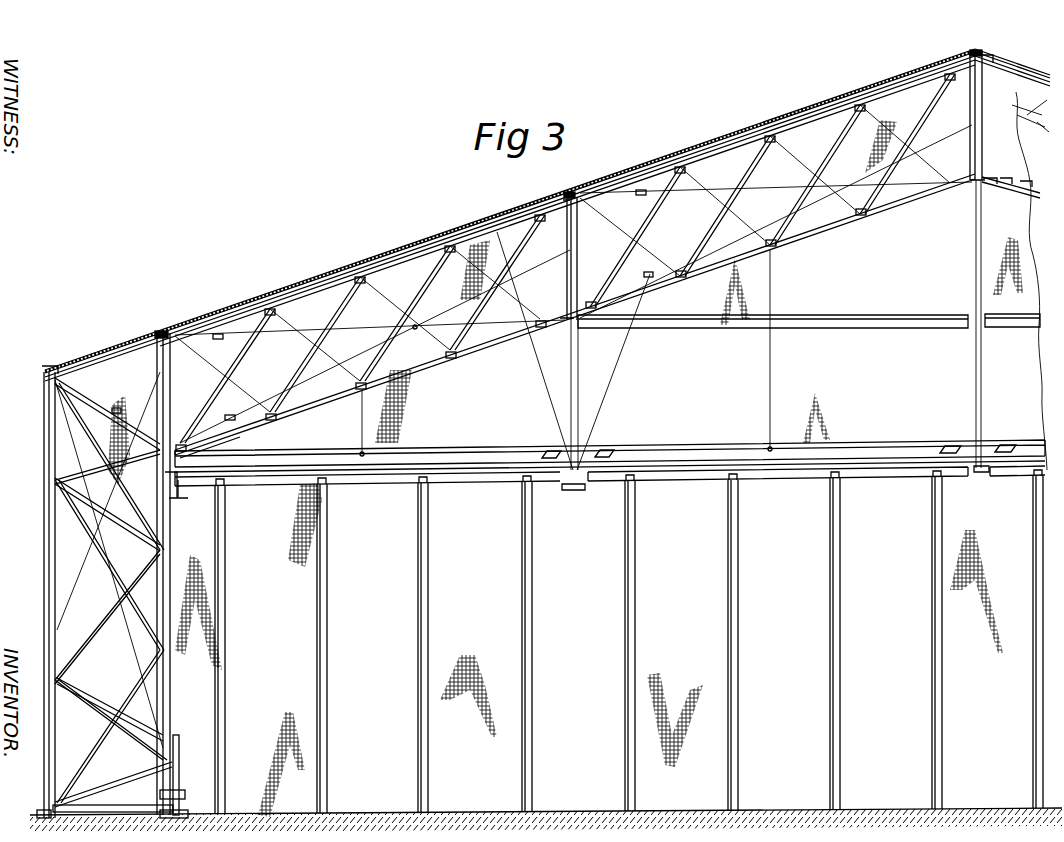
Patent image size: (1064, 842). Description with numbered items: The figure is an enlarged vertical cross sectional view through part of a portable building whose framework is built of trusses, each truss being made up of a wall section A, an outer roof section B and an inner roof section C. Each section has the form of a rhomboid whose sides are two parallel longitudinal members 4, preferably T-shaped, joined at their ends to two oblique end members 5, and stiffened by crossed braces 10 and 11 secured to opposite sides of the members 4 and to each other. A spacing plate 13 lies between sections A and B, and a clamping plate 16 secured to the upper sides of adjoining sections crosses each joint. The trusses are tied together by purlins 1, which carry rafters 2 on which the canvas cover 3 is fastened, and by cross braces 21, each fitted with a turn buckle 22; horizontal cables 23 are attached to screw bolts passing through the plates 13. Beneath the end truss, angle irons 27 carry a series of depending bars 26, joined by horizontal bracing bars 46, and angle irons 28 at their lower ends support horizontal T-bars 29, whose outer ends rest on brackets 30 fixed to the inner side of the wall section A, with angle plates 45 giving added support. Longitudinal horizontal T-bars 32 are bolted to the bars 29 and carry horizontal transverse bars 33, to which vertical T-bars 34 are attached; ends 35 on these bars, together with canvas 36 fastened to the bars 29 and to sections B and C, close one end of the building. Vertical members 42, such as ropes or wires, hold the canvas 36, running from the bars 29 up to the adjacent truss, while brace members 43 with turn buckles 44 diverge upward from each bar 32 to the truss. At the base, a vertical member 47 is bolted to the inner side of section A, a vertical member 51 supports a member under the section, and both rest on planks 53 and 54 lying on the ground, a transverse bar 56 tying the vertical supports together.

The purlin 1 is at (258, 304).
The rafter 2 is at (323, 286).
The canvas cover 3 is at (297, 282).
The longitudinal member 4 is at (390, 268).
The end member 5 is at (125, 362).
The crossed brace 10 is at (392, 341).
The crossed brace 11 is at (432, 318).
The spacing plate 13 is at (184, 492).
The clamping plate 16 is at (165, 328).
The cross brace 21 is at (385, 322).
The turn buckle 22 is at (225, 338).
The horizontal cable 23 is at (488, 452).
The depending bar 26 is at (578, 381).
The angle iron 27 is at (985, 190).
The angle iron 28 is at (605, 450).
The horizontal T-bar 29 is at (430, 452).
The bracket 30 is at (165, 500).
The longitudinal horizontal T-bar 32 is at (572, 491).
The horizontal transverse bar 33 is at (482, 483).
The vertical T-bar 34 is at (420, 603).
The end 35 is at (680, 480).
The canvas 36 is at (890, 460).
The vertical member 42 is at (360, 429).
The brace member 43 is at (545, 406).
The turn buckle 44 is at (560, 456).
The angle plate 45 is at (236, 450).
The horizontal bracing bar 46 is at (870, 315).
The vertical member 47 is at (180, 753).
The vertical member 51 is at (183, 783).
The plank 53 is at (188, 811).
The plank 54 is at (40, 817).
The transverse bar 56 is at (113, 797).
The wall section A is at (50, 423).
The outer roof section B is at (405, 250).
The inner roof section C is at (912, 100).